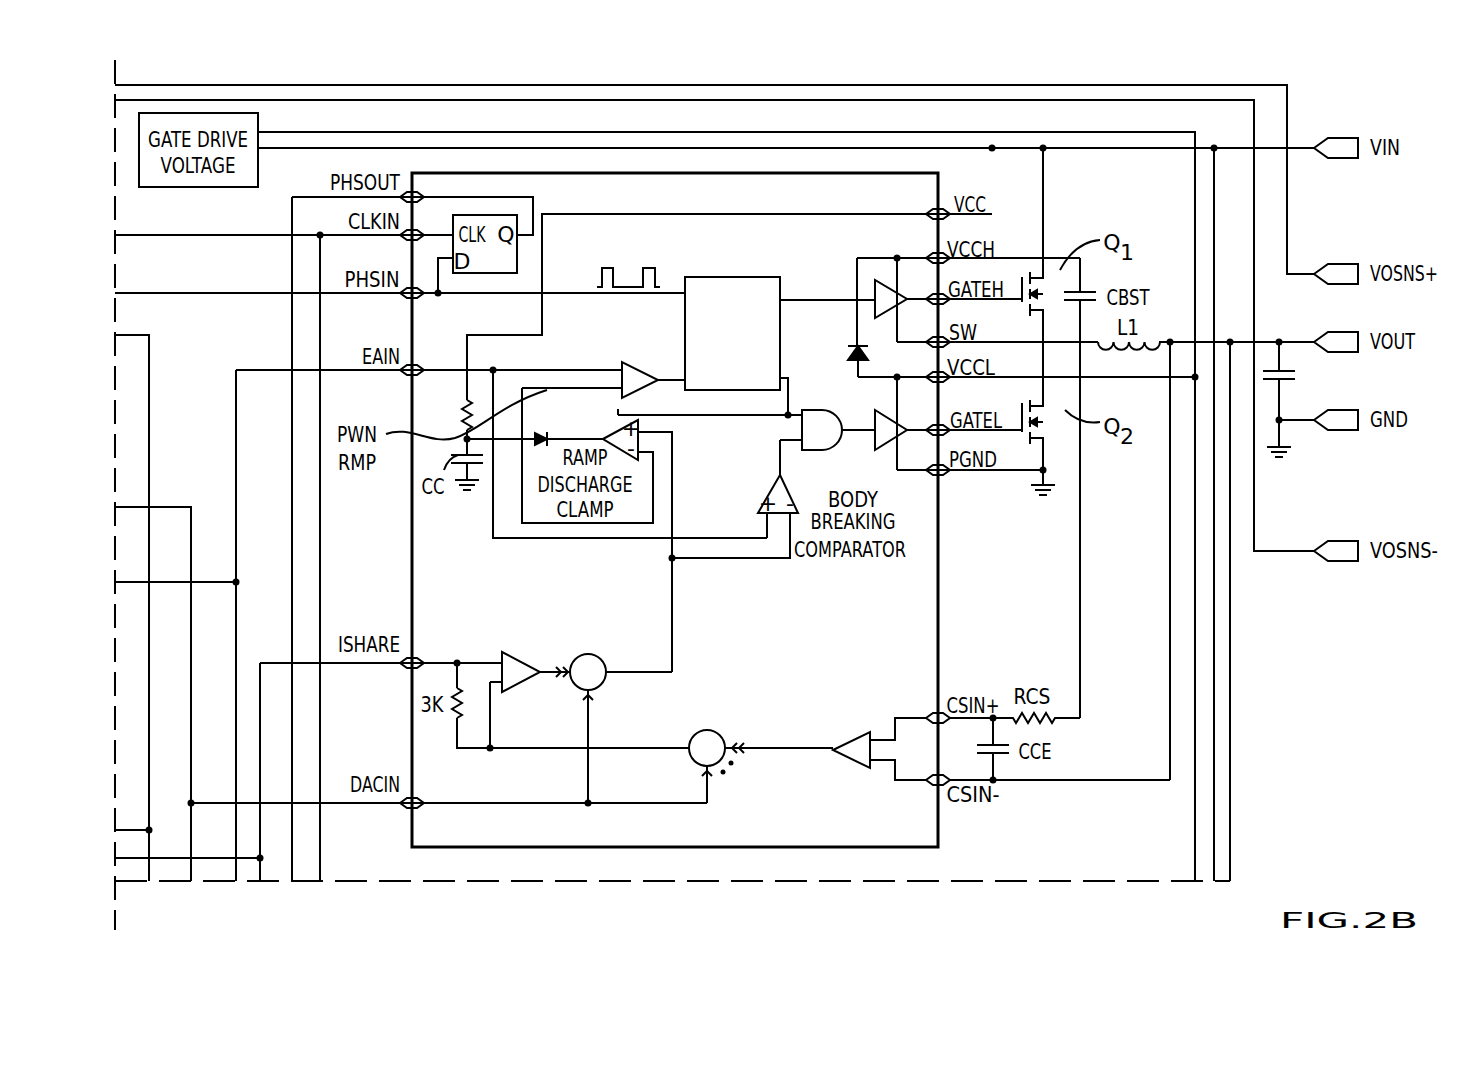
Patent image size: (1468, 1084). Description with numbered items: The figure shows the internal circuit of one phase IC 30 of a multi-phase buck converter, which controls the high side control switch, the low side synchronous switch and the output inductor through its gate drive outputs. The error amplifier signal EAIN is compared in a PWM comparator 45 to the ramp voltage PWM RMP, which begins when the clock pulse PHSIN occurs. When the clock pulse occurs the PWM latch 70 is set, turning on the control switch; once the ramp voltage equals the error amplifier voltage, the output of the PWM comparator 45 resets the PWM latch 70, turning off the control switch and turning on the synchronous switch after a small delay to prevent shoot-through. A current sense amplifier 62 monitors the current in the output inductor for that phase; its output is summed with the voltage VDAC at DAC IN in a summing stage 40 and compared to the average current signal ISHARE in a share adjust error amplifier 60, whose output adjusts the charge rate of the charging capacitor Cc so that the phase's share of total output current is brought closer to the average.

The phase IC 30 is at (940, 592).
The summing stage 40 is at (712, 730).
The PWM comparator 45 is at (618, 396).
The share adjust error amplifier 60 is at (522, 684).
The current sense amplifier 62 is at (845, 770).
The PWM latch 70 is at (782, 348).